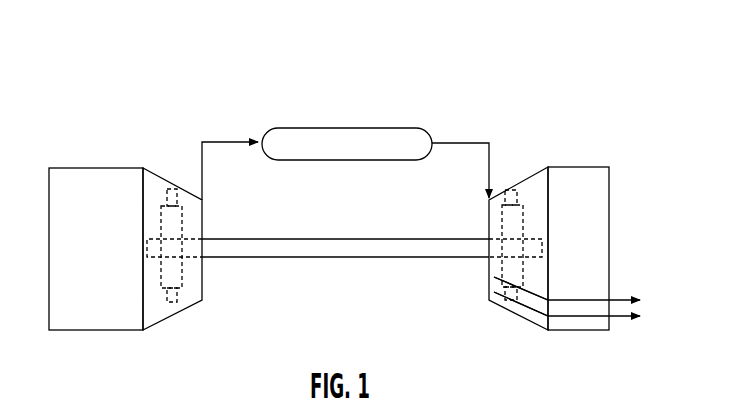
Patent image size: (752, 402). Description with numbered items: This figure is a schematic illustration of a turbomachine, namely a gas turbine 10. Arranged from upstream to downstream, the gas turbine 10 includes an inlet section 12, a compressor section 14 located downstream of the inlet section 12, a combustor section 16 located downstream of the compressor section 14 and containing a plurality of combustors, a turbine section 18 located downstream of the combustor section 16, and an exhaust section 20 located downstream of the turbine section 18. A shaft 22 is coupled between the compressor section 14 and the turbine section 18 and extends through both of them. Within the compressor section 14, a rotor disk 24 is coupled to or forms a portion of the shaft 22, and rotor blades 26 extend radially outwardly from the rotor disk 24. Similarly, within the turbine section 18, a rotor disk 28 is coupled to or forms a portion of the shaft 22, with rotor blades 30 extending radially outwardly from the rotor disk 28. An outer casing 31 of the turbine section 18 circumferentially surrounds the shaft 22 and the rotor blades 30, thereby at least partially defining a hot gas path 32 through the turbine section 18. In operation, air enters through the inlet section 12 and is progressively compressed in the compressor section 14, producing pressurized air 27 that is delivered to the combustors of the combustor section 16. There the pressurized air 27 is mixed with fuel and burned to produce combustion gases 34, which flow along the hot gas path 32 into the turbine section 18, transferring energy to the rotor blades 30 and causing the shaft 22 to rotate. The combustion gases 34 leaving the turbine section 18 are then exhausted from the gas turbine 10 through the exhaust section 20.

The gas turbine 10 is at (212, 64).
The inlet section 12 is at (80, 168).
The compressor section 14 is at (163, 175).
The combustor section 16 is at (385, 128).
The turbine section 18 is at (535, 172).
The exhaust section 20 is at (585, 167).
The shaft 22 is at (318, 258).
The rotor disk 24 is at (160, 230).
The rotor blade 26 is at (165, 200).
The pressurized air 27 is at (224, 140).
The rotor disk 28 is at (502, 213).
The rotor blade 30 is at (512, 186).
The outer casing 31 is at (542, 325).
The hot gas path 32 is at (516, 313).
The combustion gases 34 is at (447, 143).